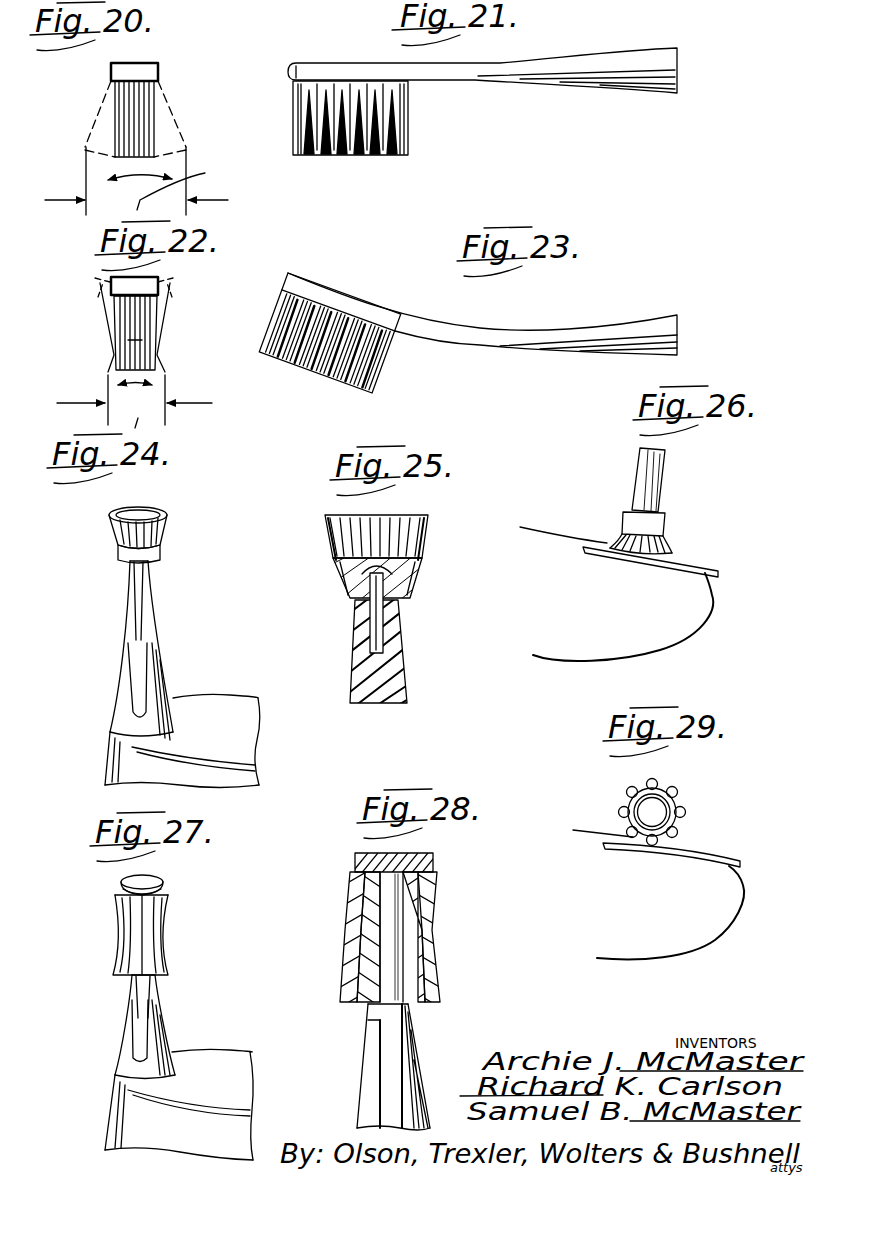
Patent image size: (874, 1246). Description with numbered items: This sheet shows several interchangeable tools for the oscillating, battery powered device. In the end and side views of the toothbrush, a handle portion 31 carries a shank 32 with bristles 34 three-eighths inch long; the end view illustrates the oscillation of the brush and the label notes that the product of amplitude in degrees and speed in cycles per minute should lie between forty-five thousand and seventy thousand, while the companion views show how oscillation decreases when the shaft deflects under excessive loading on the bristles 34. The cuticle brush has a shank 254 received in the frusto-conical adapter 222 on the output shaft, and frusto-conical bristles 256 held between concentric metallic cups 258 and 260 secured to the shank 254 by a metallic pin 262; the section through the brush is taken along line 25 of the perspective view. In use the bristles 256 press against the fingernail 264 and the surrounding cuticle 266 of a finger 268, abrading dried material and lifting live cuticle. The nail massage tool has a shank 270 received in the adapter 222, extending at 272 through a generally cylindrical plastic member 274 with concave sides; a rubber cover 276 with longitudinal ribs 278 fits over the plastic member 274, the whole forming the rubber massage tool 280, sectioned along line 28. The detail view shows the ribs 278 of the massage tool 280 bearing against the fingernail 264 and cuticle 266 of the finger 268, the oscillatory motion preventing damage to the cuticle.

In FIG. 20, the brush handle 31 is at (168, 90).
In FIG. 21, the brush handle 31 is at (540, 97).
In FIG. 22, the brush handle 31 is at (100, 338).
In FIG. 23, the brush handle 31 is at (517, 355).
In FIG. 20, the shank 32 is at (148, 67).
In FIG. 21, the shank 32 is at (520, 63).
In FIG. 22, the shank 32 is at (157, 280).
In FIG. 23, the shank 32 is at (523, 337).
In FIG. 20, the bristles 34 is at (140, 135).
In FIG. 21, the bristles 34 is at (395, 134).
In FIG. 22, the bristles 34 is at (138, 315).
In FIG. 23, the bristles 34 is at (372, 360).
In FIG. 24, the section line 25— 25 is at (118, 492).
In FIG. 27, the section line 28— 28 is at (145, 900).
In FIG. 24, the adapter 222 is at (160, 686).
In FIG. 27, the adapter 222 is at (162, 1025).
In FIG. 28, the adapter 222 is at (412, 1043).
In FIG. 24, the shank 254 is at (142, 610).
In FIG. 25, the shank 254 is at (390, 660).
In FIG. 24, the frusto-conical bristles 256 is at (173, 532).
In FIG. 25, the frusto-conical bristles 256 is at (410, 541).
In FIG. 26, the frusto-conical bristles 256 is at (668, 543).
In FIG. 25, the cup 258 is at (418, 580).
In FIG. 26, the cup 258 is at (660, 515).
In FIG. 25, the cup 260 is at (400, 532).
In FIG. 25, the metallic pin 262 is at (378, 623).
In FIG. 26, the fingernail 264 is at (688, 563).
In FIG. 29, the fingernail 264 is at (740, 864).
In FIG. 26, the cuticle 266 is at (610, 545).
In FIG. 29, the cuticle 266 is at (617, 846).
In FIG. 26, the finger 268 is at (673, 625).
In FIG. 29, the finger 268 is at (717, 925).
In FIG. 27, the shank 270 is at (160, 980).
In FIG. 28, the shank 270 is at (410, 1008).
In FIG. 28, the shank extension 272 is at (435, 870).
In FIG. 28, the plastic member 274 is at (410, 925).
In FIG. 27, the rubber cover 276 is at (165, 892).
In FIG. 28, the rubber cover 276 is at (428, 942).
In FIG. 29, the rubber cover 276 is at (632, 795).
In FIG. 27, the longitudinal ribs 278 is at (165, 918).
In FIG. 28, the longitudinal ribs 278 is at (352, 918).
In FIG. 29, the longitudinal ribs 278 is at (678, 797).
In FIG. 27, the rubber massage tool 280 is at (115, 925).
In FIG. 28, the rubber massage tool 280 is at (348, 960).
In FIG. 29, the rubber massage tool 280 is at (690, 815).